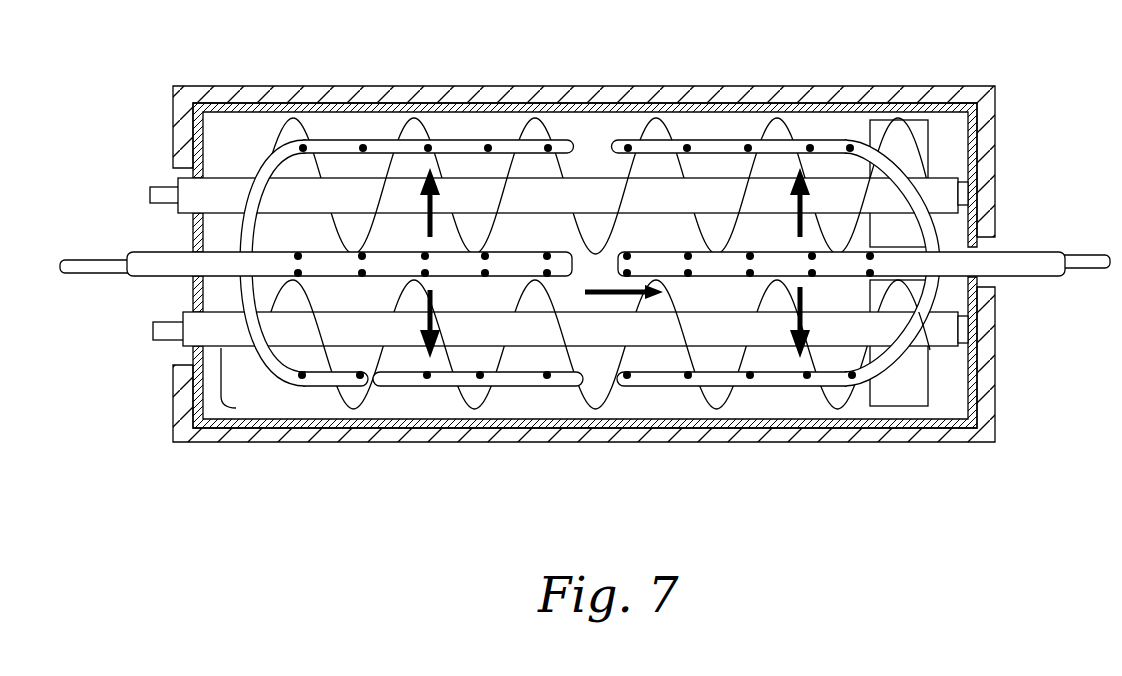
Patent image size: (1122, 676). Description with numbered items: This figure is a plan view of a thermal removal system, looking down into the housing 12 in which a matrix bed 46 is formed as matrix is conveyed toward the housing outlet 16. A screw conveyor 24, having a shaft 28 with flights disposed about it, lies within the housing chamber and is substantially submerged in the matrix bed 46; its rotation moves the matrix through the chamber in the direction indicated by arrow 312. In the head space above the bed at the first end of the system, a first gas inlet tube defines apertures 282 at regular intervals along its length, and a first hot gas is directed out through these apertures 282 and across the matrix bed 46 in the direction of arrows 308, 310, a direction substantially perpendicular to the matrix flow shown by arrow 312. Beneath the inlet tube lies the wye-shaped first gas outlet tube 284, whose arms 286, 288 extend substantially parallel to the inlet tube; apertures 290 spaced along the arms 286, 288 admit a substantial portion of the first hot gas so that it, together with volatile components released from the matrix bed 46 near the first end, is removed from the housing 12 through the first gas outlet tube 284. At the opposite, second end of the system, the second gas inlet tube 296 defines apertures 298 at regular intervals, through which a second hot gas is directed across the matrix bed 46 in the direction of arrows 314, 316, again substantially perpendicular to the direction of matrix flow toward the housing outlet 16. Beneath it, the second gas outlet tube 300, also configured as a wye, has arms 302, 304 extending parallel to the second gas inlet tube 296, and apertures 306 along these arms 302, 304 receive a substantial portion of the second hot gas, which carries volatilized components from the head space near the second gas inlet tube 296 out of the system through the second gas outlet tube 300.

The housing 12 is at (873, 432).
The housing outlet 16 is at (908, 393).
The screw conveyor 24 is at (238, 352).
The shaft 28 is at (222, 170).
The matrix bed 46 is at (642, 408).
The apertures 282 is at (160, 250).
The first gas outlet tube 284 is at (100, 275).
The arm 286 is at (412, 386).
The arm 288 is at (380, 143).
The apertures 290 is at (370, 388).
The second gas inlet tube 296 is at (836, 262).
The apertures 298 is at (733, 296).
The second gas outlet tube 300 is at (1083, 270).
The arm 302 is at (723, 390).
The arm 304 is at (702, 145).
The apertures 306 is at (760, 378).
The arrow 308 is at (440, 205).
The arrow 310 is at (445, 315).
The arrow 312 is at (593, 298).
The arrow 314 is at (795, 199).
The arrow 316 is at (806, 328).